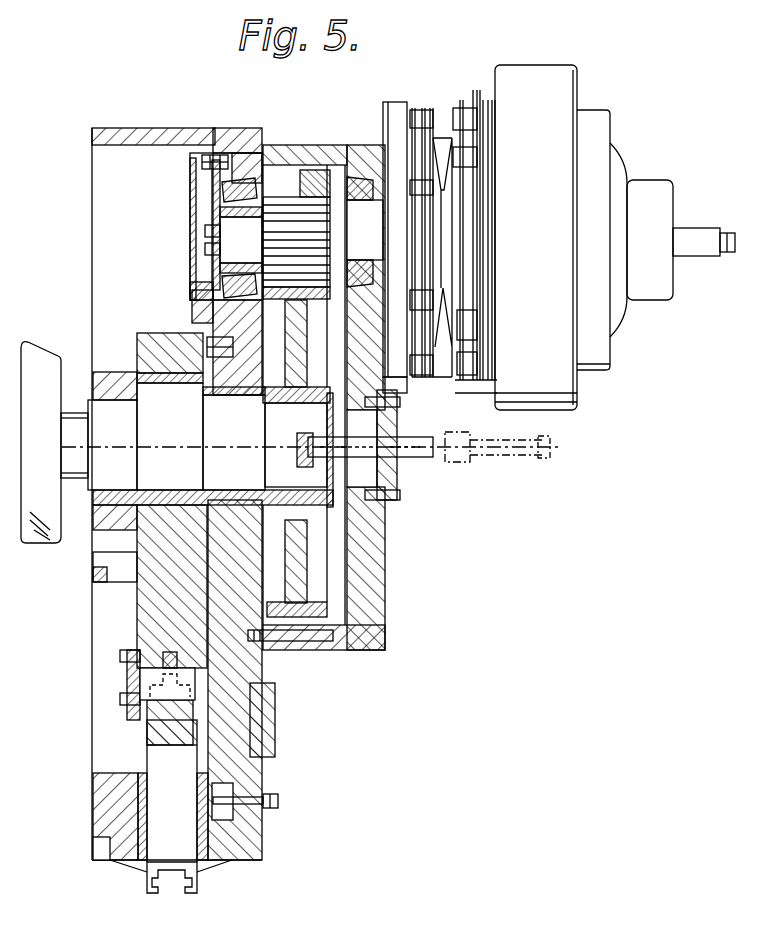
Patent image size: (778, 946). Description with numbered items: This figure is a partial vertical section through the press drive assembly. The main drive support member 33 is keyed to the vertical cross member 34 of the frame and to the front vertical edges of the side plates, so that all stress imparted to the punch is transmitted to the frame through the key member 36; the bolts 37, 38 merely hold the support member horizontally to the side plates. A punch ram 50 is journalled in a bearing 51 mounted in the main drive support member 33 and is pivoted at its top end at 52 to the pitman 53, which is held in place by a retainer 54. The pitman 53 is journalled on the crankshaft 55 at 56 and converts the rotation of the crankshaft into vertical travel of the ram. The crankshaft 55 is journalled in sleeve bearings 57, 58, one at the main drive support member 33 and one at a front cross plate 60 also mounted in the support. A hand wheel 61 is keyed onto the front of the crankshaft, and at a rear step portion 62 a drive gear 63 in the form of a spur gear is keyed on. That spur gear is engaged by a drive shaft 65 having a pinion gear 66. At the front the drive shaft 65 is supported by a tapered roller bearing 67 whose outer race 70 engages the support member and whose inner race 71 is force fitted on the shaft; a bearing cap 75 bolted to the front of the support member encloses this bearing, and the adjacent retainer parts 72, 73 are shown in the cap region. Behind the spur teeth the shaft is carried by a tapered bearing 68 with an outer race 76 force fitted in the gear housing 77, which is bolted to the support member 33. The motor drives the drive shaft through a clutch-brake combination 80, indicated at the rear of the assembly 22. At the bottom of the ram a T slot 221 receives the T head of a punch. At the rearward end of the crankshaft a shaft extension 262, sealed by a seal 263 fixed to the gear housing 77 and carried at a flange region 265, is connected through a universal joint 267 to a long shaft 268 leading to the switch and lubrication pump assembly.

The motor unit 22 is at (553, 418).
The main drive support member 33 is at (240, 798).
The vertical cross member 34 is at (100, 798).
The key member 36 is at (273, 713).
The bolt 37 is at (230, 352).
The bolt 38 is at (277, 808).
The punch ram 50 is at (178, 838).
The bearing 51 is at (145, 856).
The pivot 52 is at (195, 676).
The pitman 53 is at (145, 598).
The retainer 54 is at (125, 681).
The crankshaft 55 is at (234, 438).
The pitman journal 56 is at (173, 492).
The sleeve bearing 57 is at (124, 373).
The sleeve bearing 58 is at (210, 399).
The front cross plate 60 is at (110, 522).
The hand wheel 61 is at (33, 366).
The rear step portion 62 is at (298, 447).
The drive gear 63 is at (300, 587).
The drive shaft 65 is at (365, 232).
The pinion gear 66 is at (268, 236).
The tapered roller bearing 67 is at (210, 278).
The tapered bearing 68 is at (370, 182).
The outer race 70 is at (205, 186).
The inner race 71 is at (348, 207).
The bearing race 72 is at (207, 213).
The retaining ring 73 is at (207, 228).
The bearing cap 75 is at (225, 307).
The outer race 76 is at (375, 150).
The gear housing 77 is at (375, 552).
The clutch-brake combination 80 is at (548, 108).
The T slot 221 is at (171, 864).
The shaft extension 262 is at (397, 448).
The seal 263 is at (397, 464).
The end flange 265 is at (400, 419).
The universal joint 267 is at (472, 459).
The long shaft 268 is at (542, 454).